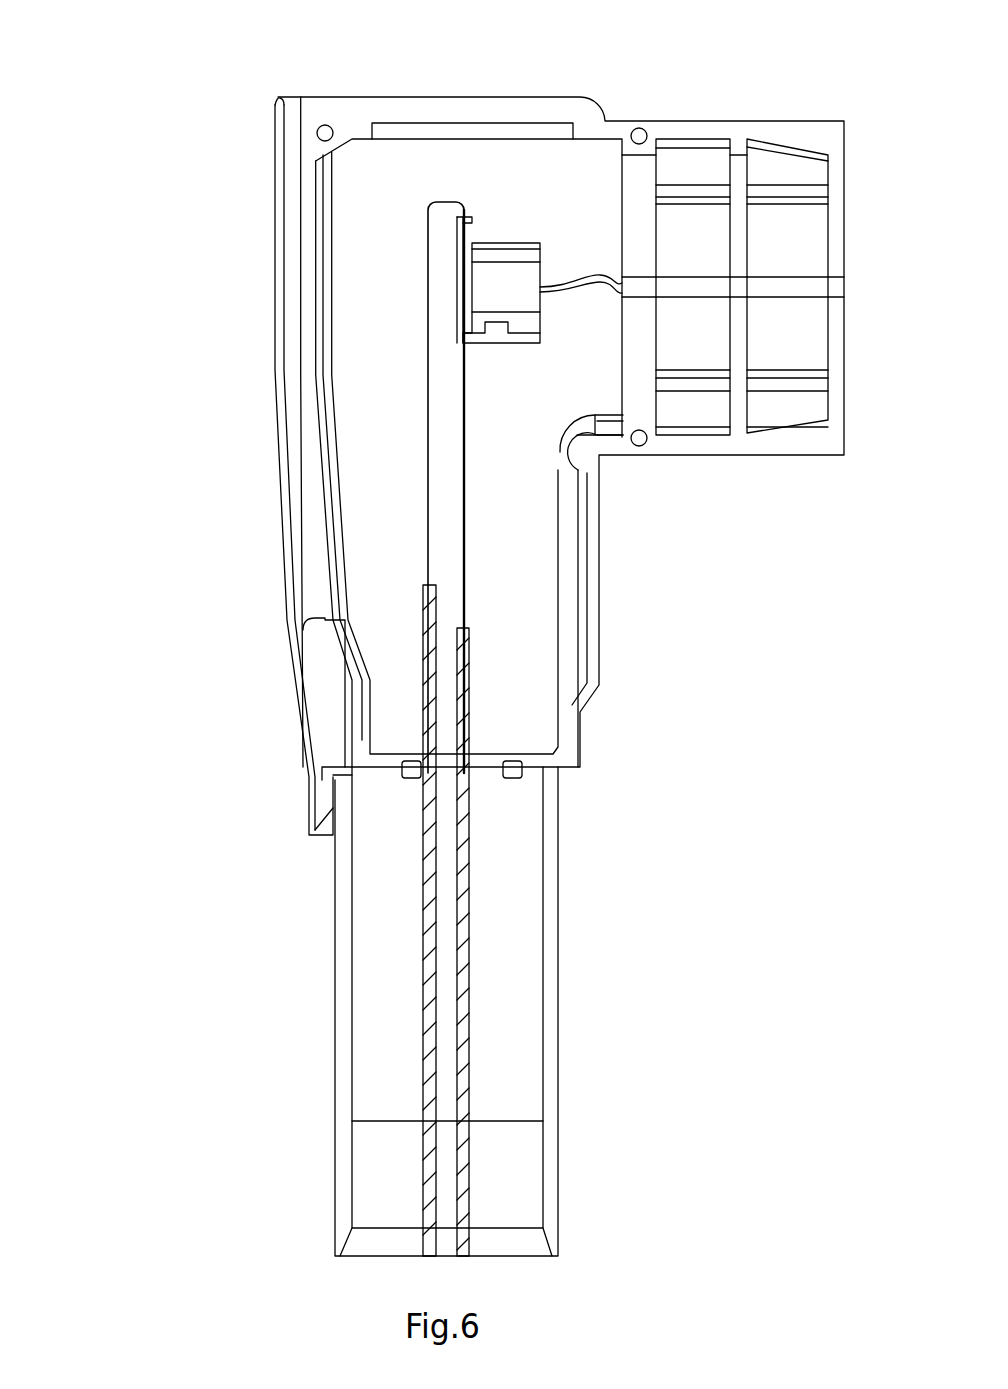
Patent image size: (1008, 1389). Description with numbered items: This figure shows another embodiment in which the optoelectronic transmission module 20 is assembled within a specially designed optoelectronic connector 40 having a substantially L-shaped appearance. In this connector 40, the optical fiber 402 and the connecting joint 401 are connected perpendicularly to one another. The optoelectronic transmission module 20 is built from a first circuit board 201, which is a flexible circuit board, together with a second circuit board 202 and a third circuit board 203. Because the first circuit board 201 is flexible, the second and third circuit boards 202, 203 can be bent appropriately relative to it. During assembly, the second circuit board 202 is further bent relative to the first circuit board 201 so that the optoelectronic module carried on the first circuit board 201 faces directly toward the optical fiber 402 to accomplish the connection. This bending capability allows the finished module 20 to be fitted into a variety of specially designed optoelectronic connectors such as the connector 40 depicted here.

The optoelectronic connector 40 is at (176, 150).
The connecting joint 401 is at (590, 633).
The optical fiber 402 is at (580, 280).
The optoelectronic transmission module 20 is at (170, 522).
The first circuit board 201 is at (428, 503).
The second circuit board 202 is at (425, 1062).
The third circuit board 203 is at (468, 893).